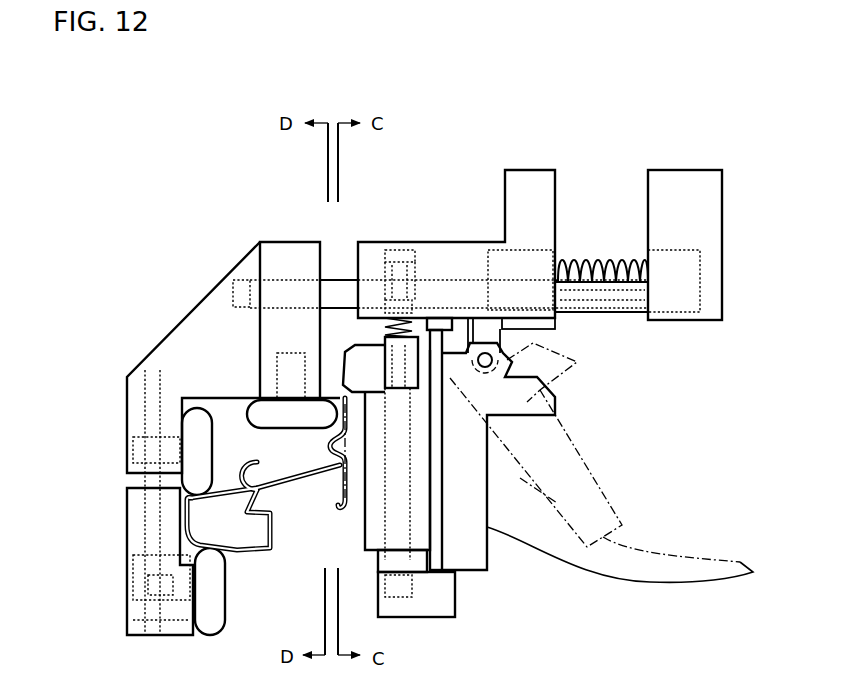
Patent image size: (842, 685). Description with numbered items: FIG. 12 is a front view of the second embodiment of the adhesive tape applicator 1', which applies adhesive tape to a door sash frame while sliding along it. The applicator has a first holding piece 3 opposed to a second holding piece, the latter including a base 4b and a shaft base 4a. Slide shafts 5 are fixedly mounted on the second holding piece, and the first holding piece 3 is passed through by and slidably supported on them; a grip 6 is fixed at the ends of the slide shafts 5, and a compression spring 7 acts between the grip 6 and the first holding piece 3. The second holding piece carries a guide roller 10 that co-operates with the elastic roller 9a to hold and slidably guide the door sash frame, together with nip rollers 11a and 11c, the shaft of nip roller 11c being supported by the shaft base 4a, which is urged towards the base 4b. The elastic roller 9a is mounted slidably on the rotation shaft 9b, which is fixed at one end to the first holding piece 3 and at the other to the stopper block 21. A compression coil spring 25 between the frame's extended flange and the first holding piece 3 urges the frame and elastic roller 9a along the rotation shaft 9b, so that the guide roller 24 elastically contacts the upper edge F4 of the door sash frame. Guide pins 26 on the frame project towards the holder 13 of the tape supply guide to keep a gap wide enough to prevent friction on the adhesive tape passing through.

The adhesive tape applicator 1' is at (110, 199).
The first holding piece 3 is at (446, 236).
The shaft base 4a is at (125, 518).
The base 4b is at (128, 373).
The slide shaft 5 is at (337, 278).
The grip 6 is at (732, 210).
The compression spring 7 is at (597, 253).
The elastic roller 9a is at (365, 523).
The rotation shaft 9b is at (413, 468).
The guide roller 10 is at (267, 415).
The nip roller 11a is at (195, 427).
The nip roller 11c is at (200, 622).
The holder 13 is at (640, 559).
The stopper block 21 is at (457, 598).
The guide roller 24 is at (370, 380).
The compression coil spring 25 is at (387, 327).
The guide pin 26 is at (438, 330).
The upper edge of the door sash frame F4 is at (340, 390).